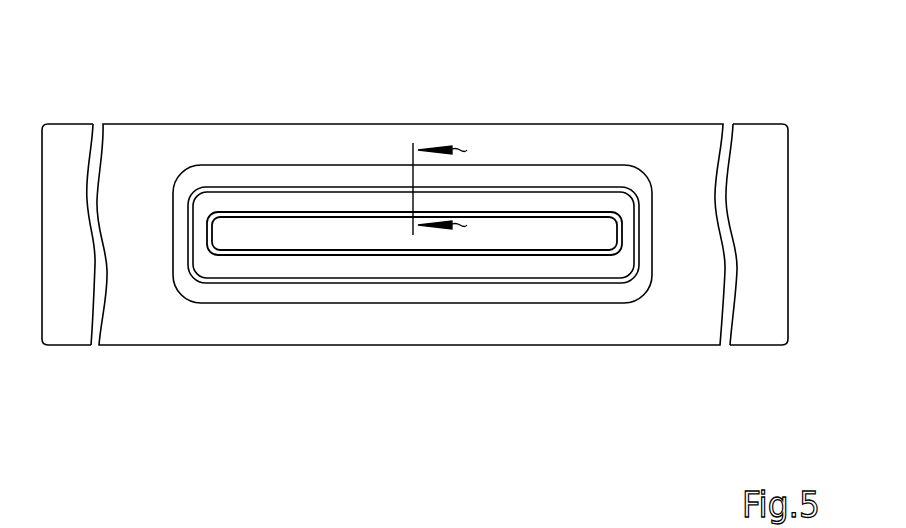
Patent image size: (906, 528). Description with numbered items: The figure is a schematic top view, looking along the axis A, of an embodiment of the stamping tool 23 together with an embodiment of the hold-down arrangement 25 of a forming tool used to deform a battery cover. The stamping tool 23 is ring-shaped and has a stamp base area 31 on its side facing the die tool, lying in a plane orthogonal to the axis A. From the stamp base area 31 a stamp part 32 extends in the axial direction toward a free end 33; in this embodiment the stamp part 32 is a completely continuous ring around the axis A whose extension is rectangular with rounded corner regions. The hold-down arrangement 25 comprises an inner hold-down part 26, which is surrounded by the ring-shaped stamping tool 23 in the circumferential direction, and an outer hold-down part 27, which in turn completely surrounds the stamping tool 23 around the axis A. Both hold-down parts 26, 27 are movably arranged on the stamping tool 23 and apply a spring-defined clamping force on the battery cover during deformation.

The stamping tool 23 is at (225, 164).
The hold-down arrangement 25 is at (630, 51).
The inner hold-down part 26 is at (556, 229).
The outer hold-down part 27 is at (627, 137).
The stamp base area 31 is at (262, 292).
The stamp part 32 is at (278, 187).
The free end 33 is at (335, 192).
The axis A is at (413, 235).